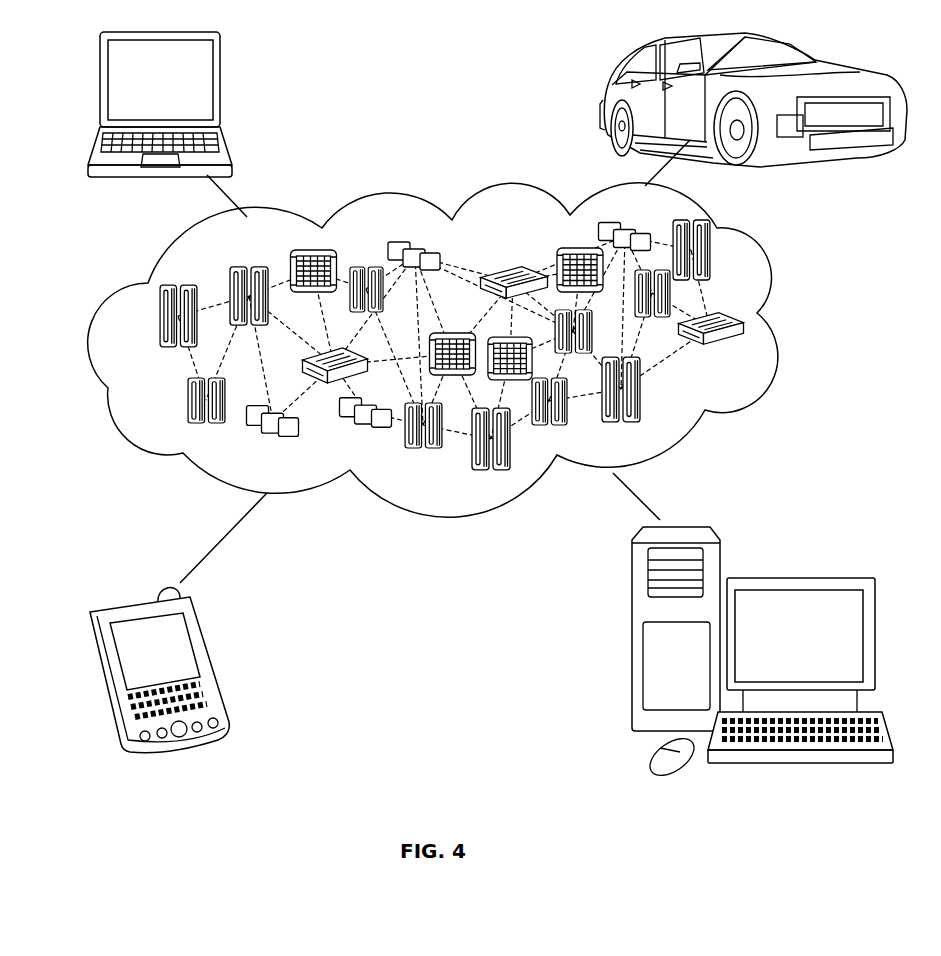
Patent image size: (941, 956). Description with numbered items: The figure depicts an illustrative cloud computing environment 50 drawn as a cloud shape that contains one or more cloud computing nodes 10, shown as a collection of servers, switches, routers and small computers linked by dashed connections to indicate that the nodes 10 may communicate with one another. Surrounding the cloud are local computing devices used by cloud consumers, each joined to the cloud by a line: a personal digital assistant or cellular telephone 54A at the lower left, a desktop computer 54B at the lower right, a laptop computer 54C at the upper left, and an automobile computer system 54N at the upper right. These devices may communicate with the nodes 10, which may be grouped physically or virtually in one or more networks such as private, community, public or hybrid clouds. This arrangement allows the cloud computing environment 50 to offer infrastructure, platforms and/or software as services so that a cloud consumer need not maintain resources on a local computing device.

The cloud computing nodes 10 is at (752, 355).
The cloud computing environment 50 is at (798, 325).
The personal digital assistant or cellular telephone 54A is at (210, 662).
The desktop computer 54B is at (797, 578).
The laptop computer 54C is at (221, 86).
The automobile computer system 54N is at (605, 103).